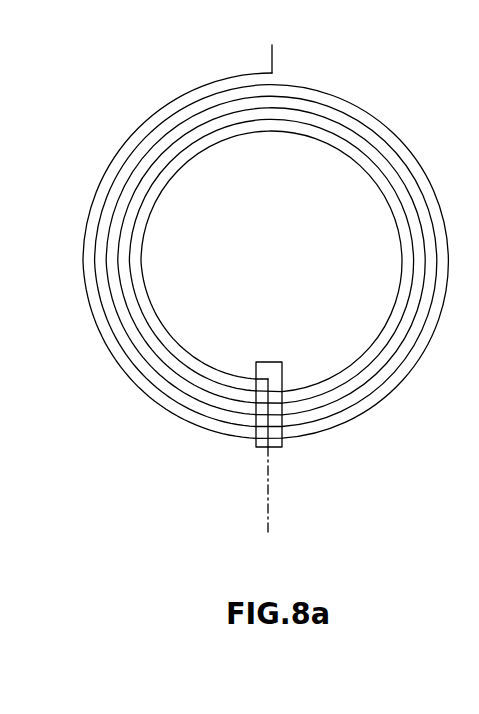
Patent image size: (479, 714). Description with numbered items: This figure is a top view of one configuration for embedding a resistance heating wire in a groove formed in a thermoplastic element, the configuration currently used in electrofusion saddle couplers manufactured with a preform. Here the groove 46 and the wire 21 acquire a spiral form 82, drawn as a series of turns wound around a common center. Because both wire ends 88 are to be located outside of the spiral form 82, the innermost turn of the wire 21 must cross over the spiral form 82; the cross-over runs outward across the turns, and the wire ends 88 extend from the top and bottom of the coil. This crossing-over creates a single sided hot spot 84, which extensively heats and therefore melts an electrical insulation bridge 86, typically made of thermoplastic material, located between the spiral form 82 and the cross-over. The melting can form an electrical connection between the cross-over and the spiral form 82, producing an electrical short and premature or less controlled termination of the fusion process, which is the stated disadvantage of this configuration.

The wire 21 is at (272, 250).
The groove 46 is at (357, 104).
The spiral form 82 is at (272, 279).
The single sided hot spot 84 is at (252, 413).
The electrical insulation bridge 86 is at (270, 362).
The wire ends 88 is at (273, 56).